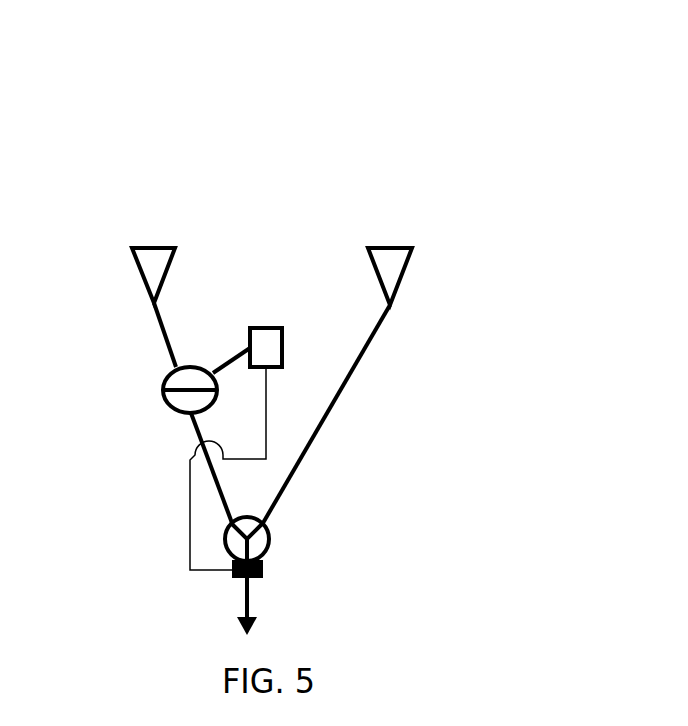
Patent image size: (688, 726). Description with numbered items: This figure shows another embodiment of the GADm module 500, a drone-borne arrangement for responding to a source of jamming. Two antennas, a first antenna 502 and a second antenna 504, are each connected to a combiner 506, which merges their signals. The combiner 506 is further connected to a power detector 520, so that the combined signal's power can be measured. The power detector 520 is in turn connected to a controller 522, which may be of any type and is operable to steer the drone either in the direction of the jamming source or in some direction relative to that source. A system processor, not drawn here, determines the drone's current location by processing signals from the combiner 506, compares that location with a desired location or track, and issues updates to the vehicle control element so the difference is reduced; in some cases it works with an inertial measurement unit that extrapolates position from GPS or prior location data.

The GADm module 500 is at (269, 147).
The first antenna 502 is at (152, 267).
The second antenna 504 is at (390, 268).
The combiner 506 is at (270, 543).
The power detector 520 is at (263, 573).
The controller 522 is at (258, 346).